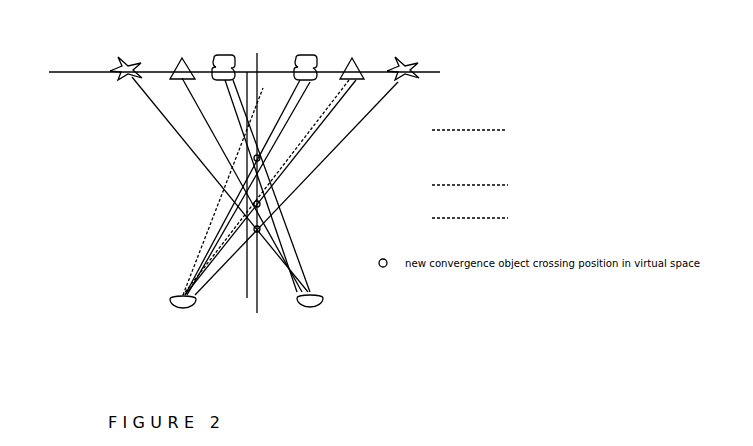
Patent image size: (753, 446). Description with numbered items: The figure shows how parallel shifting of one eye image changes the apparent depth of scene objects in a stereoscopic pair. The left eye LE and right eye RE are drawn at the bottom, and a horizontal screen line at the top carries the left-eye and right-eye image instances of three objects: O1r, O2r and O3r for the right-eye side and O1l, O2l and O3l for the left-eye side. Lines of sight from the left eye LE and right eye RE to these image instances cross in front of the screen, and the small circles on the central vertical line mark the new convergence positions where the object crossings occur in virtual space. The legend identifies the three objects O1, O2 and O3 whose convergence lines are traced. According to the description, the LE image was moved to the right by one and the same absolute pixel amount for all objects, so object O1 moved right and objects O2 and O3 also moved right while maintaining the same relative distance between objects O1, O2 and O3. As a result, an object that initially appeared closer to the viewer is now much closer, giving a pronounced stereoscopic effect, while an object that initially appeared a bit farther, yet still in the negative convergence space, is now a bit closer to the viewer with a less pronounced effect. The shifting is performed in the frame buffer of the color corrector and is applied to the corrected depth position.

The third object right-eye image O3r is at (206, 160).
The second object right-eye image O2r is at (235, 160).
The first object right-eye image O1r is at (261, 160).
The first object left-eye image O1l is at (251, 162).
The second object left-eye image O2l is at (273, 162).
The third object left-eye image O3l is at (307, 162).
The left eye image LE is at (176, 320).
The right eye image RE is at (312, 319).
The first object O1 is at (477, 131).
The second object O2 is at (479, 186).
The third object O3 is at (479, 219).